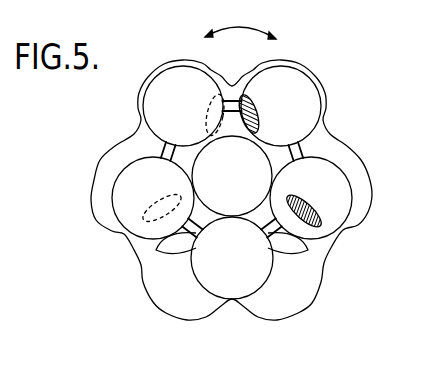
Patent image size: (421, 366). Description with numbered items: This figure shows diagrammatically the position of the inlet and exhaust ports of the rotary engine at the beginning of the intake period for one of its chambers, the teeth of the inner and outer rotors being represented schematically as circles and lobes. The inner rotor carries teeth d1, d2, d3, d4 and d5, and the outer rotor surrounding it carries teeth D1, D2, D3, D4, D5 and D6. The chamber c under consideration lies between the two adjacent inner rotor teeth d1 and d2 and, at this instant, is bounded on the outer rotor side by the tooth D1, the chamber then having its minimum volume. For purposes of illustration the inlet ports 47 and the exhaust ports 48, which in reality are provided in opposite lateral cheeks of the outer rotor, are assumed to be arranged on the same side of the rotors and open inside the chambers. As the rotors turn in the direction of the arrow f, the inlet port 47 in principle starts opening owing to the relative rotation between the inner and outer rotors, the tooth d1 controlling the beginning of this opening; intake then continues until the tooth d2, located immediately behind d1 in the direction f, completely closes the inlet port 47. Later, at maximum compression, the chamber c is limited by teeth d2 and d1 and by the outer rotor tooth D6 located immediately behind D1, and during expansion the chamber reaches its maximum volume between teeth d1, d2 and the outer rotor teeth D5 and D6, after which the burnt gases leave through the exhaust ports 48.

The inlet ports 47 is at (255, 108).
The exhaust ports 48 is at (213, 103).
The chamber c is at (233, 88).
The direction of rotation f is at (240, 31).
The tooth of the inner rotor d1 is at (298, 123).
The tooth of the inner rotor d2 is at (162, 99).
The tooth of the inner rotor d3 is at (130, 198).
The tooth of the inner rotor d4 is at (220, 278).
The tooth of the inner rotor d5 is at (335, 198).
The tooth of the outer rotor D1 is at (216, 67).
The tooth of the outer rotor D2 is at (145, 139).
The tooth of the outer rotor D3 is at (160, 247).
The tooth of the outer rotor D4 is at (222, 317).
The tooth of the outer rotor D5 is at (305, 246).
The tooth of the outer rotor D6 is at (320, 142).